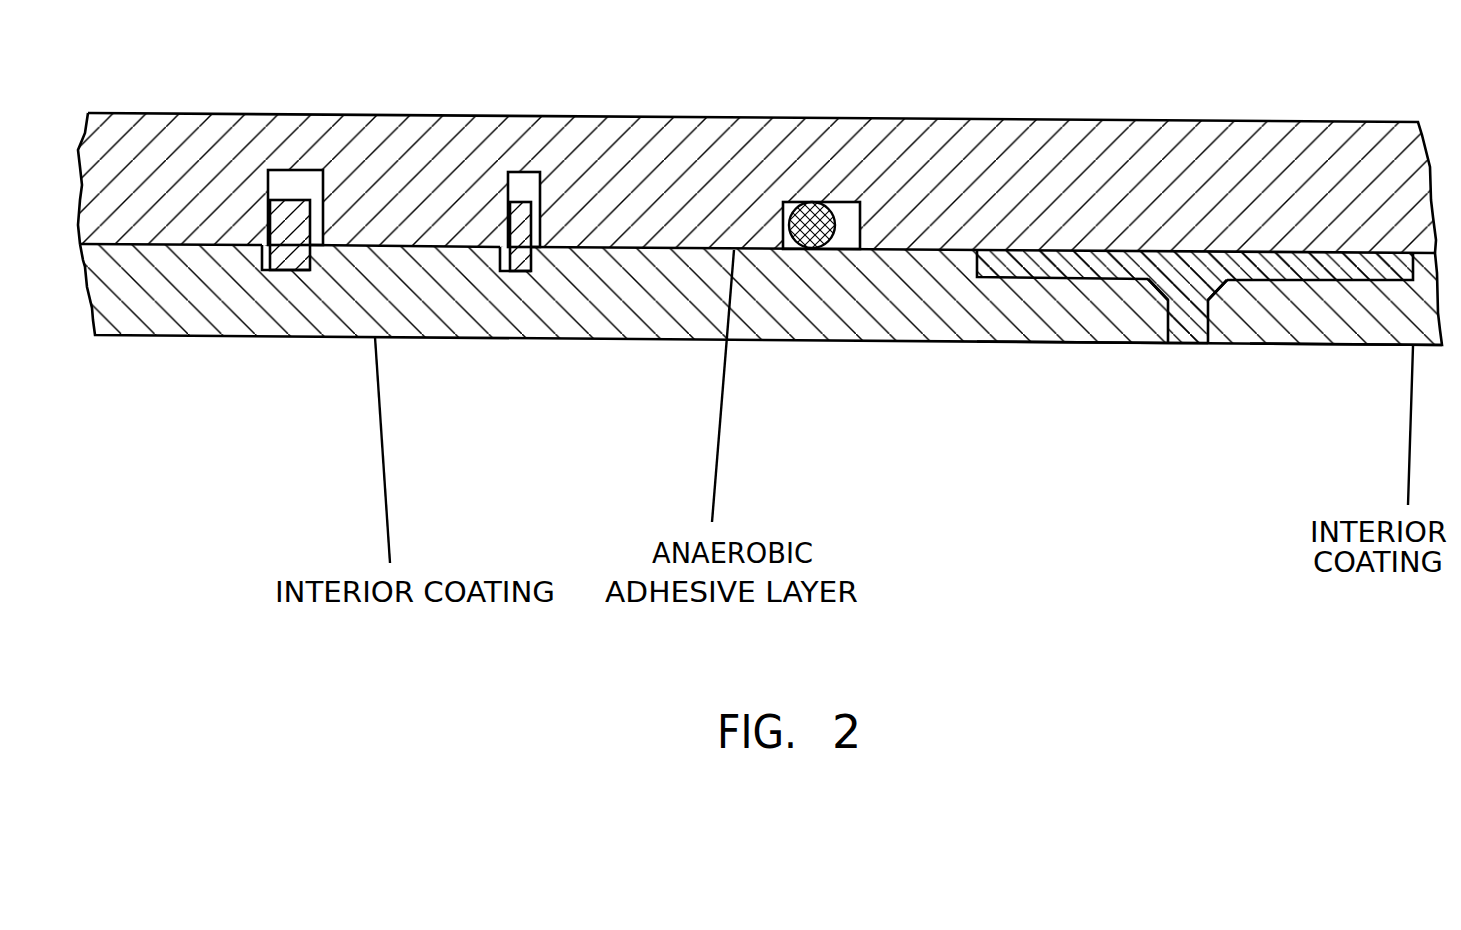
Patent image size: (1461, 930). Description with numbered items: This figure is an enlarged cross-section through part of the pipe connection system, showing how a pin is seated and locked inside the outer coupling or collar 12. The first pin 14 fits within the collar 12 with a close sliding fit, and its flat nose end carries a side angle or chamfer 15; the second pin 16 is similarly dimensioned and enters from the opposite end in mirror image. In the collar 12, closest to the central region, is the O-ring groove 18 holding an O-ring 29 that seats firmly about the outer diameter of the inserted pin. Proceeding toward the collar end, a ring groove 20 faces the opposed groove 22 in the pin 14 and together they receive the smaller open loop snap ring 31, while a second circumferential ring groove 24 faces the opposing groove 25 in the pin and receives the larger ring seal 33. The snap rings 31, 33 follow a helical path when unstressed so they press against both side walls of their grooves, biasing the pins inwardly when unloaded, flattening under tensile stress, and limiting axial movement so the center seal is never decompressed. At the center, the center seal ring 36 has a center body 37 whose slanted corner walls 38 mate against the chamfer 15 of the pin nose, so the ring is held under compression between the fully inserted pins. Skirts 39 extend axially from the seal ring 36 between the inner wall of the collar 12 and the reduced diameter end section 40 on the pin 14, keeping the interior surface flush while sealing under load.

The outer coupling or collar 12 is at (638, 116).
The first pin 14 is at (667, 337).
The side angle or chamfer 15 is at (1160, 297).
The second pin 16 is at (1375, 346).
The O-ring groove 18 is at (860, 223).
The ring groove 20 is at (308, 168).
The opposed groove 22 is at (258, 263).
The second circumferential ring groove 24 is at (533, 172).
The opposing groove 25 is at (500, 258).
The O-ring 29 is at (812, 228).
The open loop snap ring 31 is at (522, 257).
The larger ring seal 33 is at (289, 246).
The center seal ring 36 is at (1187, 344).
The center body 37 is at (1190, 322).
The slanted corner walls 38 is at (1220, 287).
The skirts 39 is at (1013, 263).
The reduced diameter end section 40 is at (1077, 323).